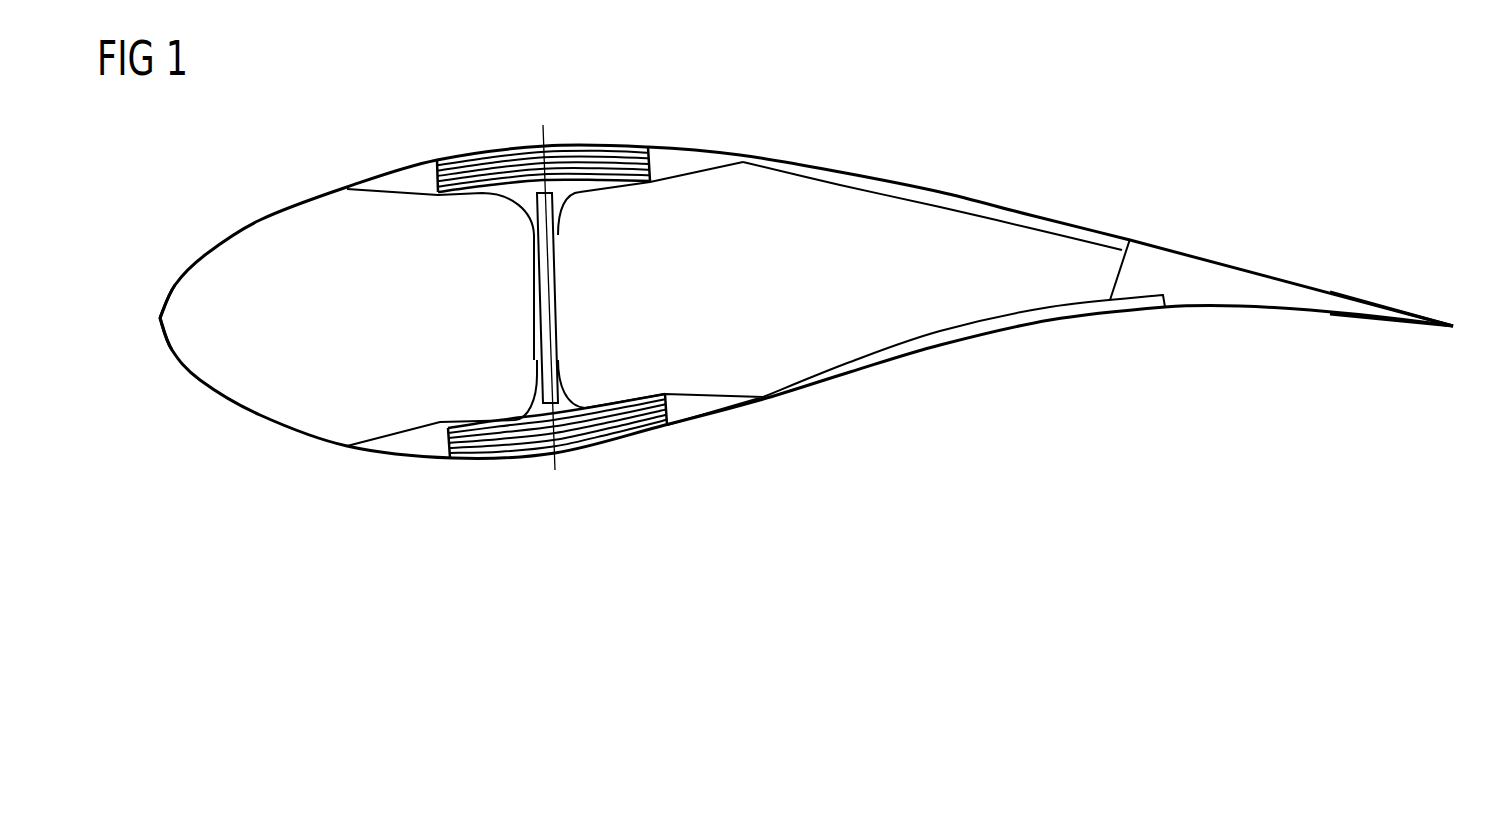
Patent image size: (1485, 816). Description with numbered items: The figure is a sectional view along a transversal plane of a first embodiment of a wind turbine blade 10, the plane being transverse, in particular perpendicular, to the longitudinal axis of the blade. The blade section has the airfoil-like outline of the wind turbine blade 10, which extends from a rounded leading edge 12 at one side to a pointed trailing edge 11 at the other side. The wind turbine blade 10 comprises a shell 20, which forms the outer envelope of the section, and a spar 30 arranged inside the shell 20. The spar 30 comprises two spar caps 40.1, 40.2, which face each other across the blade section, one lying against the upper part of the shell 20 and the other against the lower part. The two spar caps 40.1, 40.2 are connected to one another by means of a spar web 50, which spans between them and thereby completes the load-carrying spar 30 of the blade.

The wind turbine blade 10 is at (947, 366).
The trailing edge 11 is at (1430, 321).
The leading edge 12 is at (161, 333).
The shell 20 is at (950, 192).
The spar 30 is at (460, 158).
The spar cap 40.1 is at (580, 146).
The spar cap 40.2 is at (503, 450).
The spar web 50 is at (537, 307).